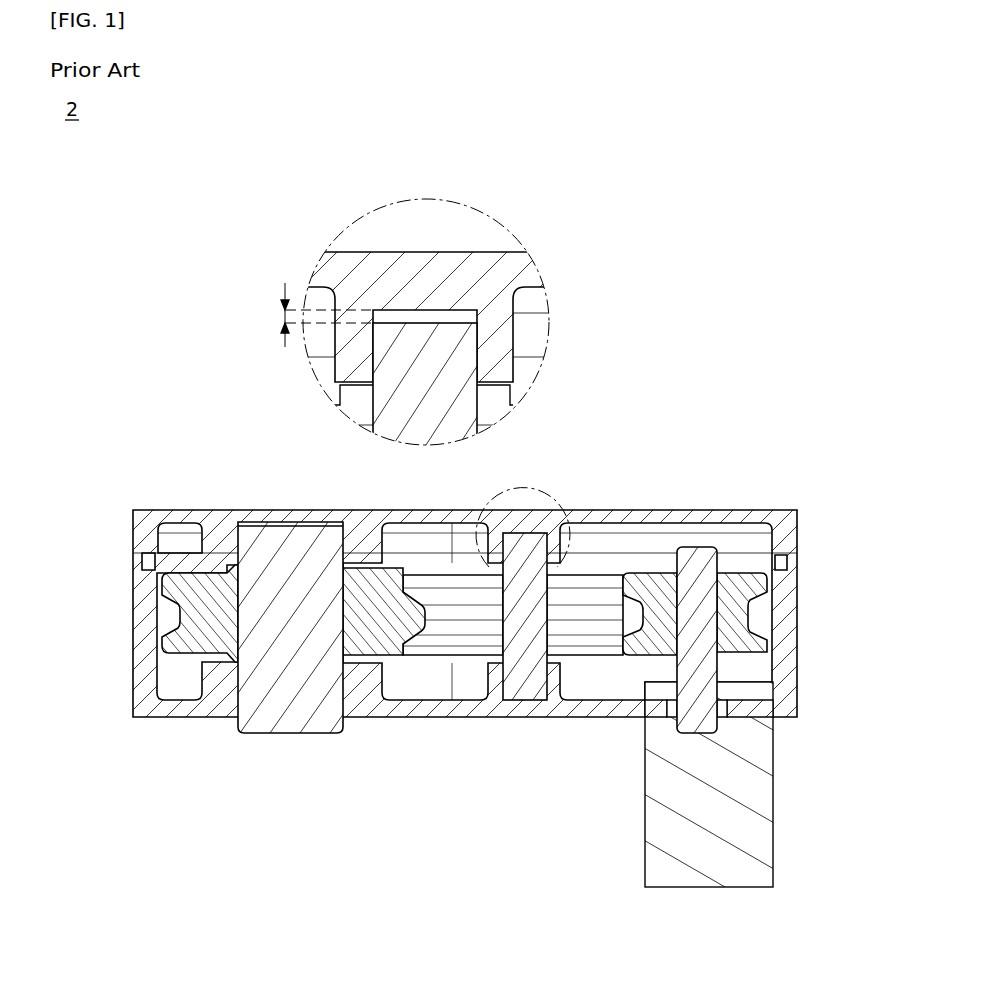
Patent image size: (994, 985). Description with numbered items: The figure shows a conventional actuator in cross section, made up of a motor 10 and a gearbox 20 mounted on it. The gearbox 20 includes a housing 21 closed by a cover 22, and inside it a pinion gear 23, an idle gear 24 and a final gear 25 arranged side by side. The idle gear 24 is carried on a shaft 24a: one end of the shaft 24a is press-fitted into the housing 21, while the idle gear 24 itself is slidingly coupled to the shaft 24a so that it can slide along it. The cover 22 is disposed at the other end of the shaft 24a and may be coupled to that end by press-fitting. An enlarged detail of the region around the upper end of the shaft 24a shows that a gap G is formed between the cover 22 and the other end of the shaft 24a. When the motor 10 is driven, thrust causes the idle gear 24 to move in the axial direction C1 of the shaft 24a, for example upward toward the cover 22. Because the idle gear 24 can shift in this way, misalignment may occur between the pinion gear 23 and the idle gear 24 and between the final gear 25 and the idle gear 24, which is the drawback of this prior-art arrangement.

The motor 10 is at (754, 770).
The gearbox 20 is at (497, 520).
The housing 21 is at (140, 661).
The cover 22 is at (362, 528).
The pinion gear 23 is at (701, 547).
The idle gear 24 is at (606, 596).
The shaft 24a is at (540, 598).
The final gear 25 is at (237, 533).
The axial direction C1 is at (468, 441).
The gap G is at (314, 315).